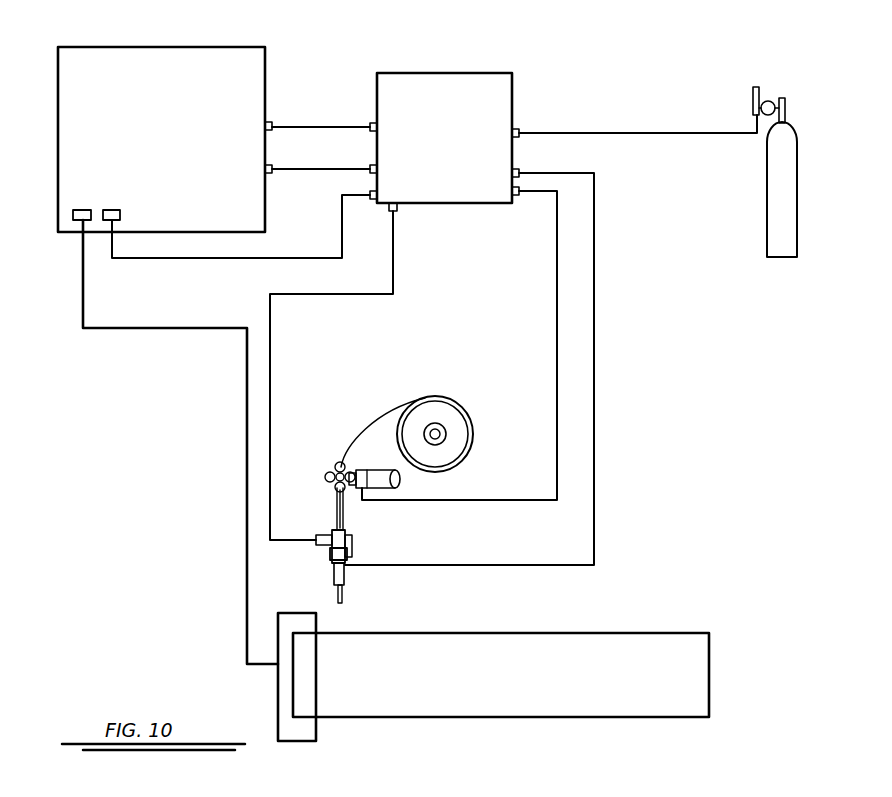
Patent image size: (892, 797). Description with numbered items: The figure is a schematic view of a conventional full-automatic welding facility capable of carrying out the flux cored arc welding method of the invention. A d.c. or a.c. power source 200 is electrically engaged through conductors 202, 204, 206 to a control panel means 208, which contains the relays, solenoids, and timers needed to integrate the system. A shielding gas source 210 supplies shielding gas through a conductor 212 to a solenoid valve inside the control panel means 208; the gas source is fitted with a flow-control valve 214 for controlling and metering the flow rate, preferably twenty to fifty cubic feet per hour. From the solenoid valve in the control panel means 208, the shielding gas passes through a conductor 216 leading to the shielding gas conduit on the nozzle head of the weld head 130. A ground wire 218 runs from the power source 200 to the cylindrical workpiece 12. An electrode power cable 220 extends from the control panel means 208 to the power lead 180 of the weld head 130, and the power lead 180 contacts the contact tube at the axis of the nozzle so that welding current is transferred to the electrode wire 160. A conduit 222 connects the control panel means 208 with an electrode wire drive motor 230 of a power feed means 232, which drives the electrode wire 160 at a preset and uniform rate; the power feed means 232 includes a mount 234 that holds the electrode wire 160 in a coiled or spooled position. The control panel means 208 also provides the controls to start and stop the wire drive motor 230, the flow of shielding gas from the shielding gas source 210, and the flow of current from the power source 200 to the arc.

The cylindrical workpiece 12 is at (682, 631).
The weld head 130 is at (356, 564).
The electrode wire 160 is at (406, 398).
The power lead 180 is at (316, 546).
The power source 200 is at (146, 73).
The conductor 202 is at (305, 125).
The conductor 204 is at (283, 168).
The conductor 206 is at (272, 258).
The control panel means 208 is at (480, 70).
The shielding gas source 210 is at (776, 232).
The conductor 212 is at (668, 114).
The flow-control valve 214 is at (774, 103).
The conductor 216 is at (597, 309).
The ground wire 218 is at (186, 331).
The electrode power cable 220 is at (270, 360).
The conduit 222 is at (556, 272).
The electrode wire drive motor 230 is at (399, 481).
The power feed means 232 is at (347, 431).
The mount 234 is at (452, 426).